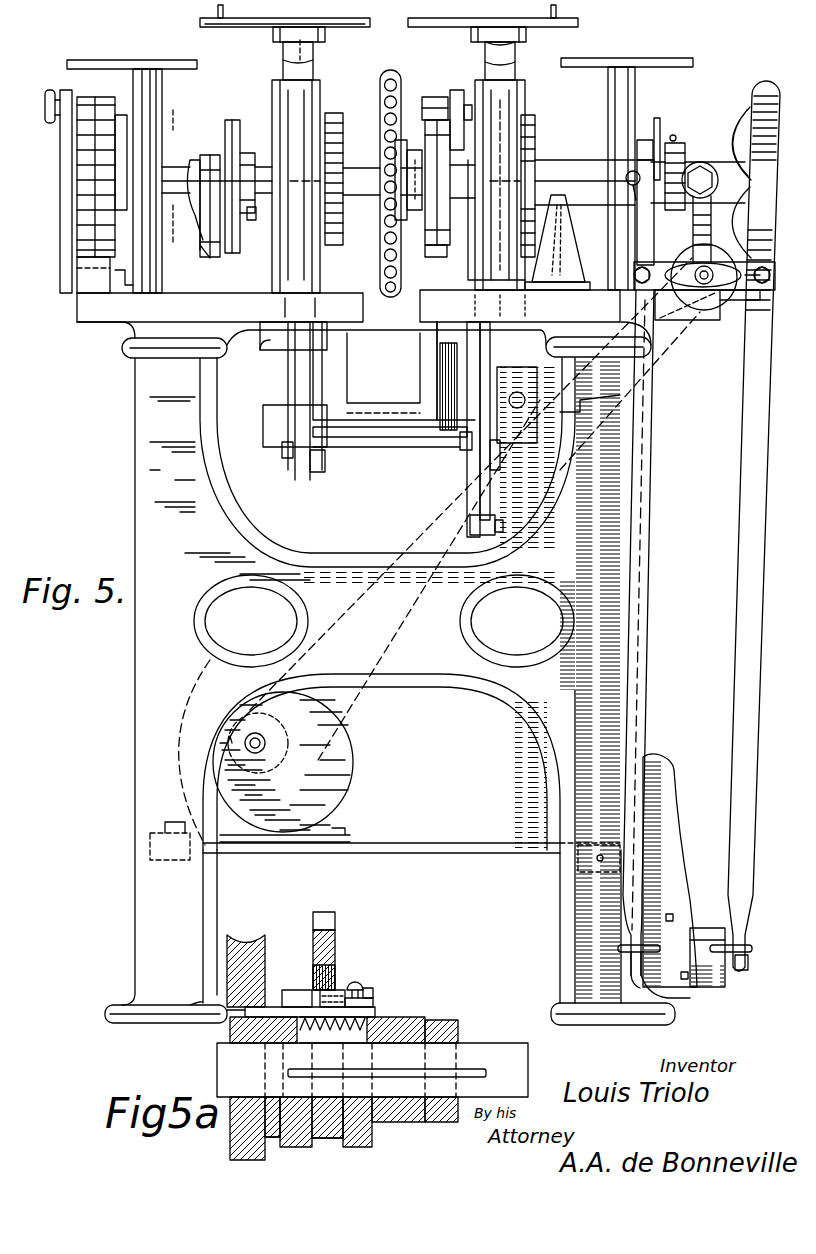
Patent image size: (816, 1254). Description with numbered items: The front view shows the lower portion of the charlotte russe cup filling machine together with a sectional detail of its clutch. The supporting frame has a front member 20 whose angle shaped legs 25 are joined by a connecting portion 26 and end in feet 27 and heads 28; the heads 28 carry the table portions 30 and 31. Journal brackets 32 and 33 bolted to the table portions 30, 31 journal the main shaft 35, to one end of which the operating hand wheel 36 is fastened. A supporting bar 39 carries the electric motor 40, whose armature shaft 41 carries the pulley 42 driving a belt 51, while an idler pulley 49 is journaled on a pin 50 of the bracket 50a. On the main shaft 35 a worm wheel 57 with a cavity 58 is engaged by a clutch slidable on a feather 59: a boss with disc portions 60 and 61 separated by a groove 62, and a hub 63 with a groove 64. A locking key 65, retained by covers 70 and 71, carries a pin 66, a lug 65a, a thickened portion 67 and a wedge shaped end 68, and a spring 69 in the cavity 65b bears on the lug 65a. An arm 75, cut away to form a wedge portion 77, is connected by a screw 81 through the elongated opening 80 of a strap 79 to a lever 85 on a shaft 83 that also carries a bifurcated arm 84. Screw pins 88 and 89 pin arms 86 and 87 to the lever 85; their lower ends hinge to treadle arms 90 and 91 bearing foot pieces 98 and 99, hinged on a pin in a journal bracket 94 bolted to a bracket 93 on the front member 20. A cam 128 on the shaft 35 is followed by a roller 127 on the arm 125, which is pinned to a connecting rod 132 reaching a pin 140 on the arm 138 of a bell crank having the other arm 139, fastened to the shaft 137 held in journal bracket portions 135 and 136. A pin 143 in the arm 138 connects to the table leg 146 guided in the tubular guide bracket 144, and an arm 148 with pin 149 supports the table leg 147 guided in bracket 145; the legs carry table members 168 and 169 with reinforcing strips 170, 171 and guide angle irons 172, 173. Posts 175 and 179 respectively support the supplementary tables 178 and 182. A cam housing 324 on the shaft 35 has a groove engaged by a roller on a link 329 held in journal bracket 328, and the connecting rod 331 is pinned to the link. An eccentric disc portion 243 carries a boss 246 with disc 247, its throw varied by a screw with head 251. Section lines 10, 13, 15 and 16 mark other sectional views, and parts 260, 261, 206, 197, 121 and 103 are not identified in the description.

In FIG. 5, the guide angle iron 173 is at (216, 12).
In FIG. 5, the table member 169 is at (262, 27).
In FIG. 5, the guide angle iron 172 is at (575, 17).
In FIG. 5, the supplementary table 182 is at (117, 60).
In FIG. 5, the supplementary table 178 is at (660, 58).
In FIG. 5, the post 179 is at (164, 98).
In FIG. 5, the section line 13 is at (178, 168).
In FIG. 5, the cam housing 324 is at (95, 97).
In FIG. 5, the link 329 is at (62, 270).
In FIG. 5, the connecting rod 331 is at (46, 112).
In FIG. 5, the journal bracket 328 is at (78, 290).
In FIG. 5, the journal bracket 32 is at (128, 268).
In FIG. 5, the main shaft 35 is at (175, 167).
In FIG. 5A, the main shaft 35 is at (472, 1048).
In FIG. 5, the hub 260 is at (210, 155).
In FIG. 5, the boss 246 is at (225, 105).
In FIG. 5, the pin 261 is at (210, 255).
In FIG. 5, the head 251 is at (237, 120).
In FIG. 5, the disc portion 243 is at (246, 153).
In FIG. 5, the disc 247 is at (252, 222).
In FIG. 5, the tubular guide bracket 145 is at (322, 96).
In FIG. 5, the reinforcing strip 171 is at (326, 35).
In FIG. 5, the table leg 147 is at (314, 66).
In FIG. 5, the section line 10 is at (338, 285).
In FIG. 5, the gear 206 is at (335, 245).
In FIG. 5, the sprocket 197 is at (380, 118).
In FIG. 5, the section line 16 is at (413, 150).
In FIG. 5, the roller 127 is at (432, 97).
In FIG. 5, the arm 125 is at (457, 90).
In FIG. 5, the cam 128 is at (437, 257).
In FIG. 5, the tubular guide bracket 144 is at (526, 98).
In FIG. 5, the table member 168 is at (472, 36).
In FIG. 5, the reinforcing strip 170 is at (470, 38).
In FIG. 5, the table leg 146 is at (517, 66).
In FIG. 5, the gear 121 is at (537, 145).
In FIG. 5, the section line 15 is at (505, 184).
In FIG. 5, the connecting rod 132 is at (468, 272).
In FIG. 5, the journal bracket 33 is at (572, 262).
In FIG. 5, the spring 103 is at (552, 255).
In FIG. 5, the post 175 is at (637, 98).
In FIG. 5, the strap 79 is at (654, 238).
In FIG. 5, the arm 86 is at (652, 408).
In FIG. 5, the disc portion 60 is at (643, 140).
In FIG. 5A, the disc portion 60 is at (293, 1147).
In FIG. 5, the arm 75 is at (657, 118).
In FIG. 5A, the arm 75 is at (338, 930).
In FIG. 5, the screw 81 is at (628, 172).
In FIG. 5, the elongated opening 80 is at (630, 190).
In FIG. 5, the disc portion 61 is at (680, 143).
In FIG. 5A, the disc portion 61 is at (360, 1147).
In FIG. 5, the hub 63 is at (697, 162).
In FIG. 5A, the hub 63 is at (398, 1122).
In FIG. 5, the groove 64 is at (744, 128).
In FIG. 5A, the groove 64 is at (440, 1125).
In FIG. 5, the operating hand wheel 36 is at (774, 82).
In FIG. 5, the bifurcated arm 84 is at (742, 222).
In FIG. 5, the screw pin 88 is at (636, 286).
In FIG. 5, the shaft 83 is at (708, 268).
In FIG. 5, the lever 85 is at (687, 311).
In FIG. 5, the screw pin 89 is at (755, 292).
In FIG. 5, the table portion 30 is at (220, 307).
In FIG. 5, the table portion 31 is at (520, 306).
In FIG. 5, the head 28 is at (128, 358).
In FIG. 5, the front member 20 is at (400, 690).
In FIG. 5, the leg 25 is at (133, 775).
In FIG. 5, the foot 27 is at (106, 1016).
In FIG. 5, the supporting bar 39 is at (395, 848).
In FIG. 5, the shaft 137 is at (275, 400).
In FIG. 5, the journal bracket portion 135 is at (430, 355).
In FIG. 5, the journal bracket portion 136 is at (340, 380).
In FIG. 5, the pin 140 is at (462, 450).
In FIG. 5, the idler pulley 49 is at (468, 380).
In FIG. 5, the arm 138 is at (467, 470).
In FIG. 5, the arm 139 is at (490, 502).
In FIG. 5, the pin 143 is at (500, 462).
In FIG. 5, the pin 50 is at (530, 428).
In FIG. 5, the arm 148 is at (320, 472).
In FIG. 5, the pin 149 is at (280, 455).
In FIG. 5, the bracket 50a is at (622, 395).
In FIG. 5, the arm 87 is at (750, 453).
In FIG. 5, the belt 51 is at (430, 515).
In FIG. 5, the connecting portion 26 is at (410, 620).
In FIG. 5, the electric motor 40 is at (340, 755).
In FIG. 5, the armature shaft 41 is at (250, 738).
In FIG. 5, the pulley 42 is at (220, 745).
In FIG. 5, the bracket 93 is at (678, 805).
In FIG. 5, the journal bracket 94 is at (706, 928).
In FIG. 5, the foot piece 98 is at (628, 940).
In FIG. 5, the treadle arm 90 is at (640, 985).
In FIG. 5, the foot piece 99 is at (748, 938).
In FIG. 5, the treadle arm 91 is at (745, 970).
In FIG. 5A, the feather 59 is at (486, 1075).
In FIG. 5A, the worm wheel 57 is at (248, 940).
In FIG. 5A, the locking key 65 is at (272, 1007).
In FIG. 5A, the lug 65a is at (300, 1043).
In FIG. 5A, the cavity 65b is at (350, 1043).
In FIG. 5A, the spring 69 is at (330, 1043).
In FIG. 5A, the cover 70 is at (297, 988).
In FIG. 5A, the wedge portion 77 is at (312, 970).
In FIG. 5A, the wedge shaped end 68 is at (345, 990).
In FIG. 5A, the pin 66 is at (360, 982).
In FIG. 5A, the cover 71 is at (374, 990).
In FIG. 5A, the thickened portion 67 is at (374, 1002).
In FIG. 5A, the cavity 58 is at (243, 1015).
In FIG. 5A, the groove 62 is at (327, 1147).